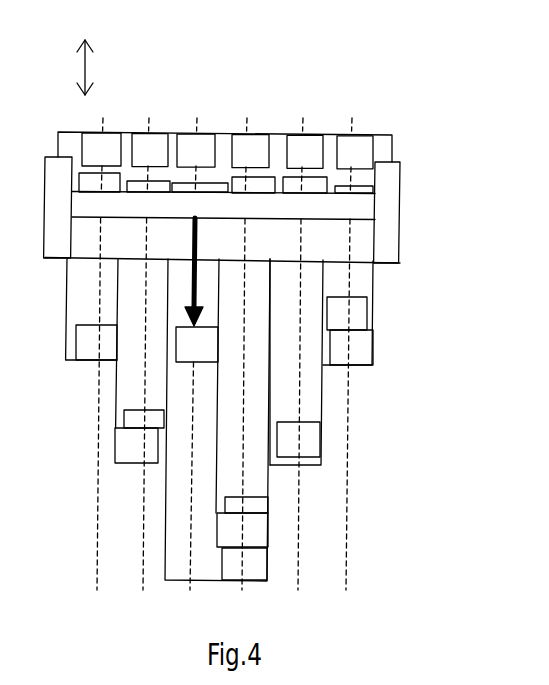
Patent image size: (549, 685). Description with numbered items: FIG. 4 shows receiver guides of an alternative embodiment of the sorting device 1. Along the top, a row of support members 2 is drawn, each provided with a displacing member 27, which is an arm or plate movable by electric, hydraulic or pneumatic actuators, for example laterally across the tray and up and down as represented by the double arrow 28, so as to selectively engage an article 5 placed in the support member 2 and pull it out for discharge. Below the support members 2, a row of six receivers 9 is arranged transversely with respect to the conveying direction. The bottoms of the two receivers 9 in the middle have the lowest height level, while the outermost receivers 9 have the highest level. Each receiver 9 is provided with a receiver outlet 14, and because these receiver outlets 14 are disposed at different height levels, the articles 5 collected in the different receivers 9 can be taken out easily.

The sorting device 1 is at (369, 130).
The support member 2 is at (329, 160).
The article 5 is at (362, 311).
The receiver 9 is at (318, 393).
The receiver outlet 14 is at (375, 338).
The displacing member 27 is at (200, 130).
The double arrow 28 is at (85, 68).